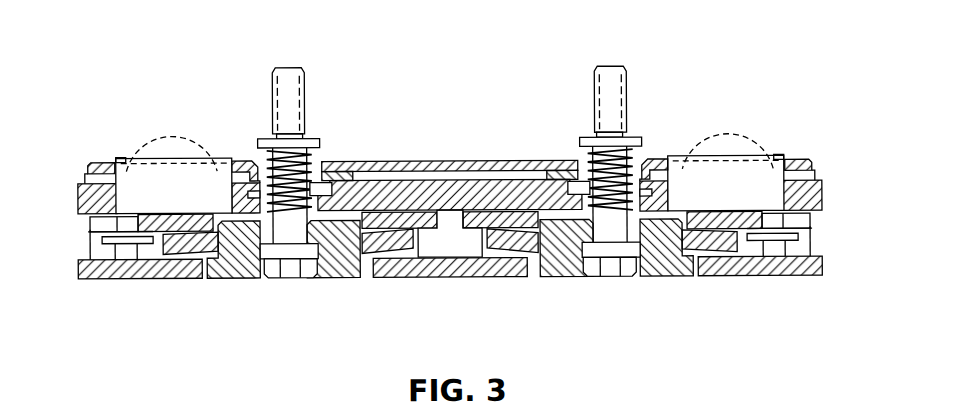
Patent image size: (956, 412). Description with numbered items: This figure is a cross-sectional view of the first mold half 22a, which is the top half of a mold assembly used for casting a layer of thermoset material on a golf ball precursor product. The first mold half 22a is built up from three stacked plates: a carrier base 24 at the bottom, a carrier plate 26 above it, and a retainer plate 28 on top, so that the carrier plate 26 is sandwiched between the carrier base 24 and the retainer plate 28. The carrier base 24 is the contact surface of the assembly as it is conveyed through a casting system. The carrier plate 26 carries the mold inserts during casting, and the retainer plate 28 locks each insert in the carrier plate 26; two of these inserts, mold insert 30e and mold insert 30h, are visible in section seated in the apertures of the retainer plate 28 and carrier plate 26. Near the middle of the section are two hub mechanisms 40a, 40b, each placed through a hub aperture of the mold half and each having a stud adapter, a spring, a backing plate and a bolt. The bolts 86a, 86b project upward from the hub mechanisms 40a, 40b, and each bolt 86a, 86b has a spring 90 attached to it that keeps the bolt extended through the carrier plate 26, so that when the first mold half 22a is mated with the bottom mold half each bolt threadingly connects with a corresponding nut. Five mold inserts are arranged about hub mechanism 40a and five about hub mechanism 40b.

The first mold half 22a is at (189, 81).
The carrier base 24 is at (90, 280).
The carrier plate 26 is at (78, 195).
The retainer plate 28 is at (88, 163).
The mold insert 30e is at (125, 157).
The mold insert 30h is at (777, 157).
The hub mechanism 40a is at (240, 275).
The hub mechanism 40b is at (672, 273).
The bolt 86a is at (305, 93).
The bolt 86b is at (597, 92).
The spring 90 is at (312, 158).